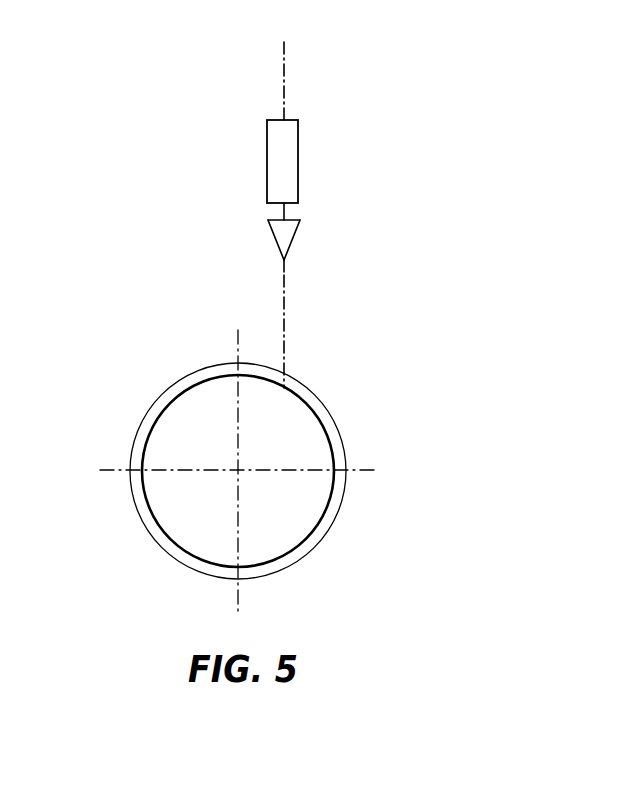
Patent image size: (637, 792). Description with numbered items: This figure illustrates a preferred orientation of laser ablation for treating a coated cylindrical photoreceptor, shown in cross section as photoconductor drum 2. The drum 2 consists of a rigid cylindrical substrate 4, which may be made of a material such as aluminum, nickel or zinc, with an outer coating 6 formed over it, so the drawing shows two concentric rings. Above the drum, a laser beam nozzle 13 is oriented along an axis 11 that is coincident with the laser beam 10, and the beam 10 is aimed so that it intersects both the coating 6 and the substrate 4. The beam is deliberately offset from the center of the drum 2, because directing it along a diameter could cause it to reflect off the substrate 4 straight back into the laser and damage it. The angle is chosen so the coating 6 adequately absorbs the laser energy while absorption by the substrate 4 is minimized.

The photoconductor drum 2 is at (176, 288).
The rigid cylindrical substrate 4 is at (178, 542).
The outer coating 6 is at (347, 457).
The laser beam 10 is at (284, 319).
The axis 11 is at (284, 100).
The laser beam nozzle 13 is at (297, 237).